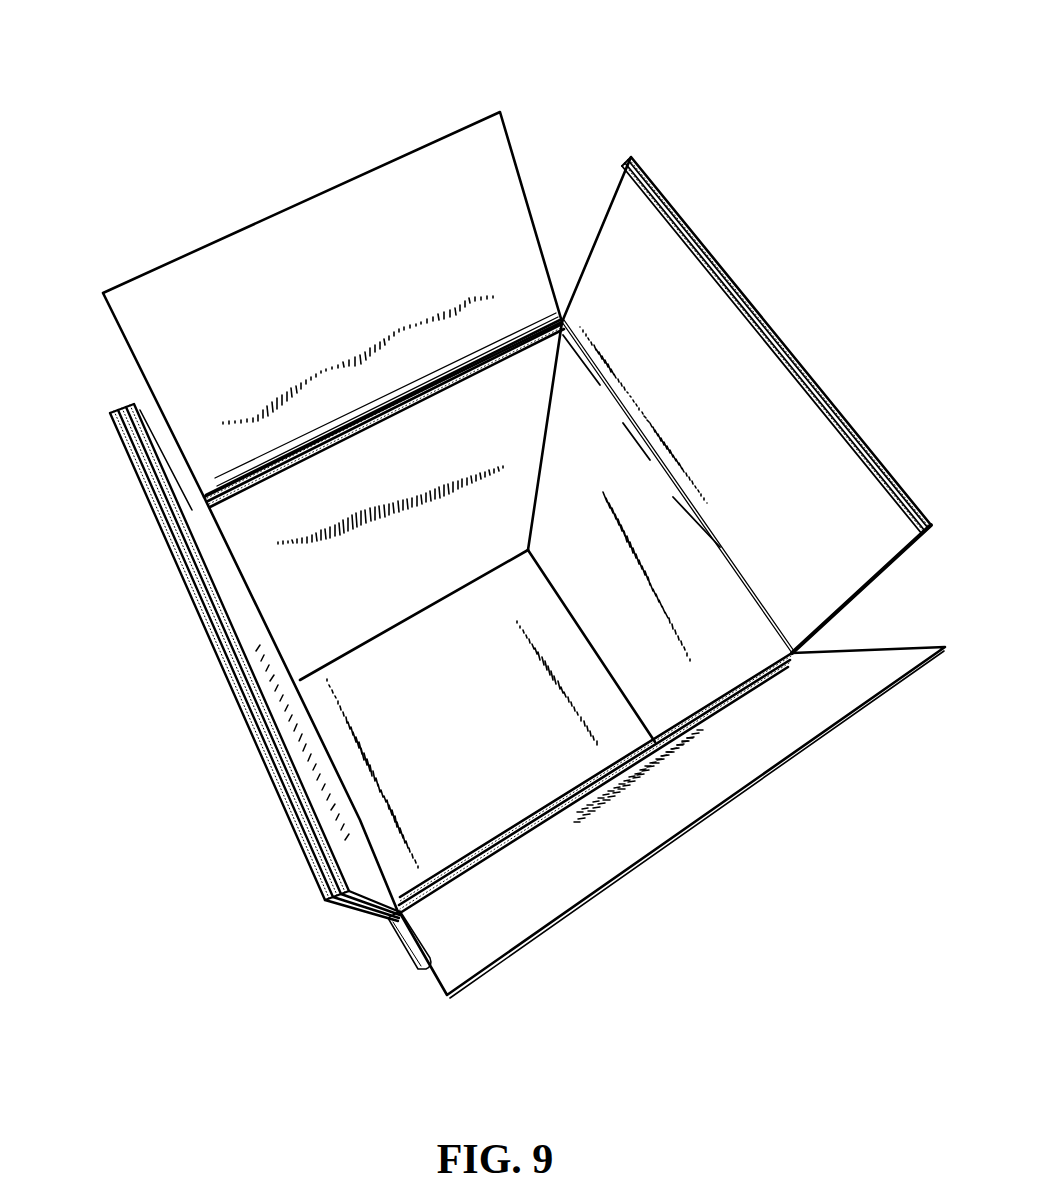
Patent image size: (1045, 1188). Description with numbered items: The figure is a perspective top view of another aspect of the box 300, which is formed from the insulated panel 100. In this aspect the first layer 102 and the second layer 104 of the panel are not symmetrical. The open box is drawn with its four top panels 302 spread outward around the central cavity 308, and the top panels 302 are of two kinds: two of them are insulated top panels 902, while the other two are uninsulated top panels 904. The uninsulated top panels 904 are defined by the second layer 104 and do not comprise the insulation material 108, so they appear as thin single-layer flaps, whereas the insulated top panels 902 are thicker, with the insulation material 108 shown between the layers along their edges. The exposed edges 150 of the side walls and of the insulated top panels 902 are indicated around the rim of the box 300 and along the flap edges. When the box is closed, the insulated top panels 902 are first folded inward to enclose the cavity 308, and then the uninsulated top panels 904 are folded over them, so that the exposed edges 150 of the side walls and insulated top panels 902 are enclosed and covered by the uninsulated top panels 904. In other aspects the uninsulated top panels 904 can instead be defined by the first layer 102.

The box 300 is at (190, 190).
The insulated panel 100 is at (360, 230).
The second layer 104 is at (488, 223).
The first layer 102 is at (752, 427).
The insulation material 108 is at (255, 712).
The exposed edges 150 is at (193, 482).
The top panels 302 is at (290, 253).
The cavity 308 is at (720, 642).
The insulated top panels 902 is at (677, 337).
The uninsulated top panels 904 is at (433, 257).